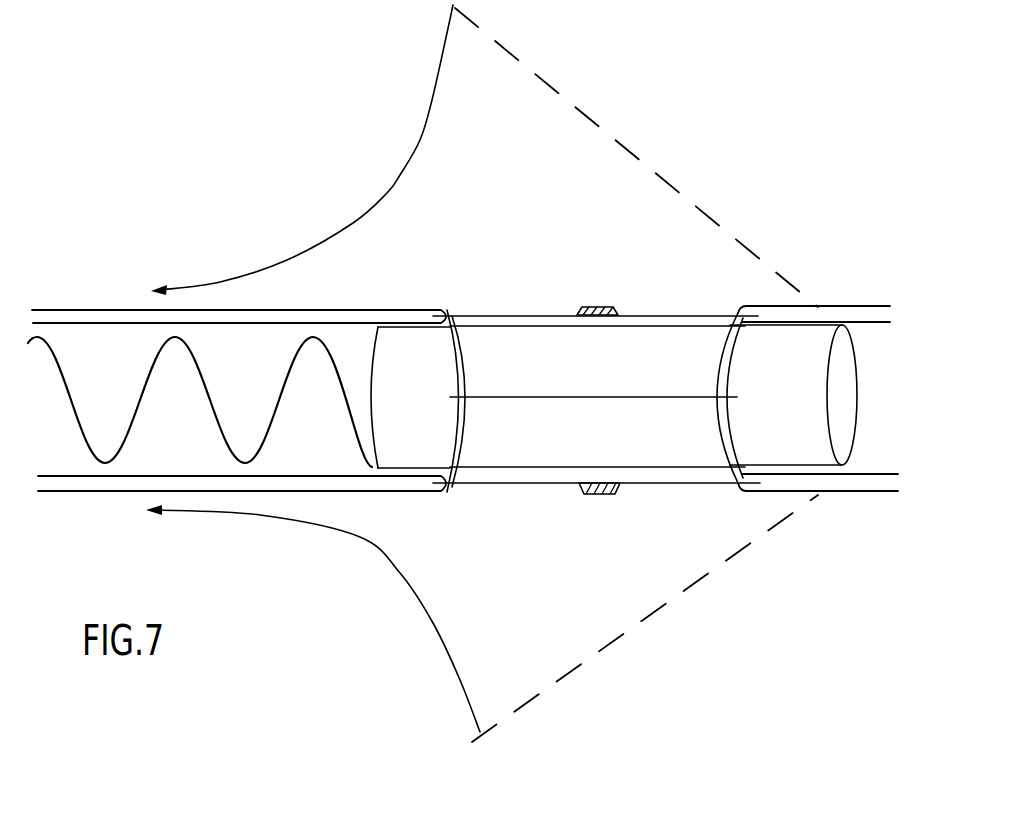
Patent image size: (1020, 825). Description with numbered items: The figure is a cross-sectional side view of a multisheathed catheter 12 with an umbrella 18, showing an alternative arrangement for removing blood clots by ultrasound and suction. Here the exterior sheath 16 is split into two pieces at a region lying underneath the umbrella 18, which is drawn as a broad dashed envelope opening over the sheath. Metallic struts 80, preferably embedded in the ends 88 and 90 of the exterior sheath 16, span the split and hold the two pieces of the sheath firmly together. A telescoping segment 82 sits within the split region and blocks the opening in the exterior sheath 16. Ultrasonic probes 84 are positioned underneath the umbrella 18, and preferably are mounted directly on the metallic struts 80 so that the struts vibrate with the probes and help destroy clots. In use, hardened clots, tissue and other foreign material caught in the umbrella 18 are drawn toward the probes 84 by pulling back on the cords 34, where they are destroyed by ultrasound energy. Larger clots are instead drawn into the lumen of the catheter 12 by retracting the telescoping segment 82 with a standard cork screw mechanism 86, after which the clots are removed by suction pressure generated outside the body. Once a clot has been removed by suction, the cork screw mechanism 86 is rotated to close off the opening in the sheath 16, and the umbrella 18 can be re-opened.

The catheter 12 is at (96, 228).
The exterior sheath 16 is at (103, 318).
The umbrella 18 is at (552, 84).
The cords 34 is at (374, 212).
The metallic struts 80 is at (532, 315).
The telescoping segment 82 is at (805, 388).
The ultrasonic probes 84 is at (598, 308).
The cork screw mechanism 86 is at (68, 393).
The end of the exterior sheath 88 is at (458, 352).
The end of the exterior sheath 90 is at (720, 347).